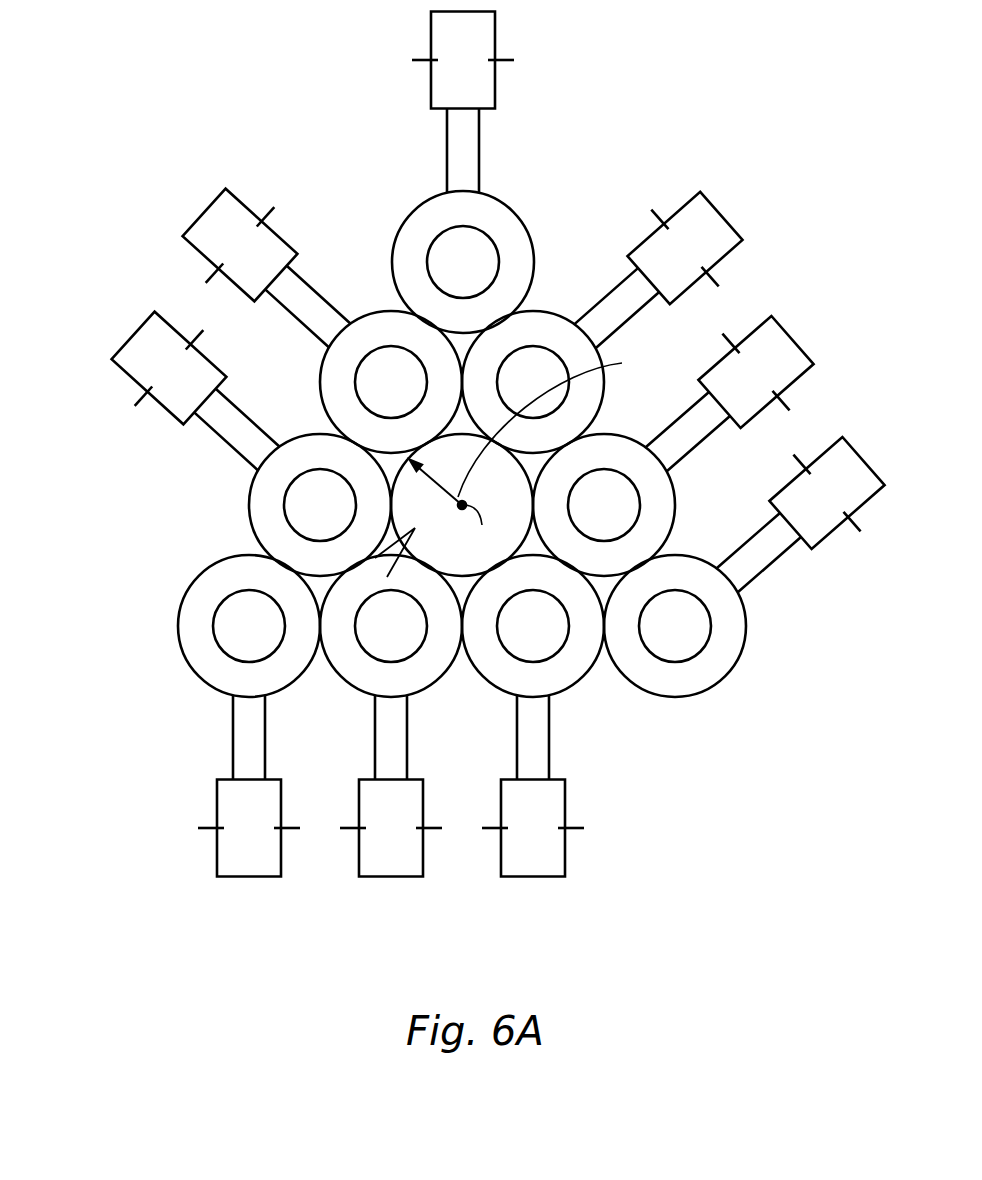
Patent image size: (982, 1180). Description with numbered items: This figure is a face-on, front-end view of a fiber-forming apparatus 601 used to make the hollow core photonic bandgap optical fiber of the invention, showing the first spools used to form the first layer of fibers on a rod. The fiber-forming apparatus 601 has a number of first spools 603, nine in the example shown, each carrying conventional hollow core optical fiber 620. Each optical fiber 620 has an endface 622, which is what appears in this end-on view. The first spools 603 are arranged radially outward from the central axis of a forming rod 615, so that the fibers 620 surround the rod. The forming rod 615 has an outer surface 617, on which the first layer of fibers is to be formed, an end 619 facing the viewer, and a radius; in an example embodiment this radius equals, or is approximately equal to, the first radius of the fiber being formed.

The fiber-forming apparatus 601 is at (778, 91).
The first spool 603 is at (496, 28).
The forming rod 615 is at (417, 490).
The outer surface 617 is at (390, 503).
The end 619 is at (375, 558).
The hollow core optical fiber 620 is at (480, 143).
The endface 622 is at (482, 217).